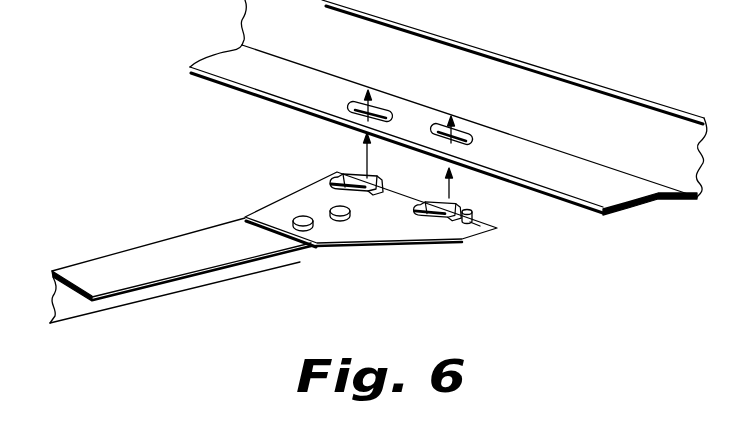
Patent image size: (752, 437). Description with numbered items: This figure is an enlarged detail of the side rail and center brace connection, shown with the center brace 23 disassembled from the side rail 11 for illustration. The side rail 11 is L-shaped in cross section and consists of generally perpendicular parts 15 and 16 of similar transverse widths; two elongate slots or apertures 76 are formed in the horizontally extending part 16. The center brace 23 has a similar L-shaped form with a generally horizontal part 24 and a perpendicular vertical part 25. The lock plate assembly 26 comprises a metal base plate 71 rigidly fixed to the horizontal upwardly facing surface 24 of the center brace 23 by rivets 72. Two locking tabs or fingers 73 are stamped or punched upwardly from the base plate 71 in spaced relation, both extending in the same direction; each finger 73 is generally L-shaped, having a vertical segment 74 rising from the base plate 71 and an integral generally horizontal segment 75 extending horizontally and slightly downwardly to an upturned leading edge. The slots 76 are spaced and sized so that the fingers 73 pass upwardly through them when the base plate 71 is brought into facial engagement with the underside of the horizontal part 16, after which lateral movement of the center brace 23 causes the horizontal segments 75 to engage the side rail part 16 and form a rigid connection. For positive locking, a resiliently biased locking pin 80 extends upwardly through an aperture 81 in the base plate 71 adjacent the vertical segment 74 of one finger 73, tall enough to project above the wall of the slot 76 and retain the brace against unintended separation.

The side rail 11 is at (460, 128).
The side rail part 15 is at (474, 98).
The horizontally extending part of side rail 16 is at (626, 205).
The elongate slots 76 is at (398, 116).
The locking tabs or fingers 73 is at (380, 178).
The vertical segment 74 is at (440, 219).
The horizontal segment 75 is at (343, 221).
The locking pin 80 is at (476, 214).
The aperture 81 is at (476, 222).
The base plate 71 is at (394, 226).
The rivets 72 is at (314, 225).
The center brace 23 is at (180, 284).
The horizontal part 24 is at (110, 268).
The vertical part 25 is at (72, 314).
The lock plate assembly 26 is at (296, 259).